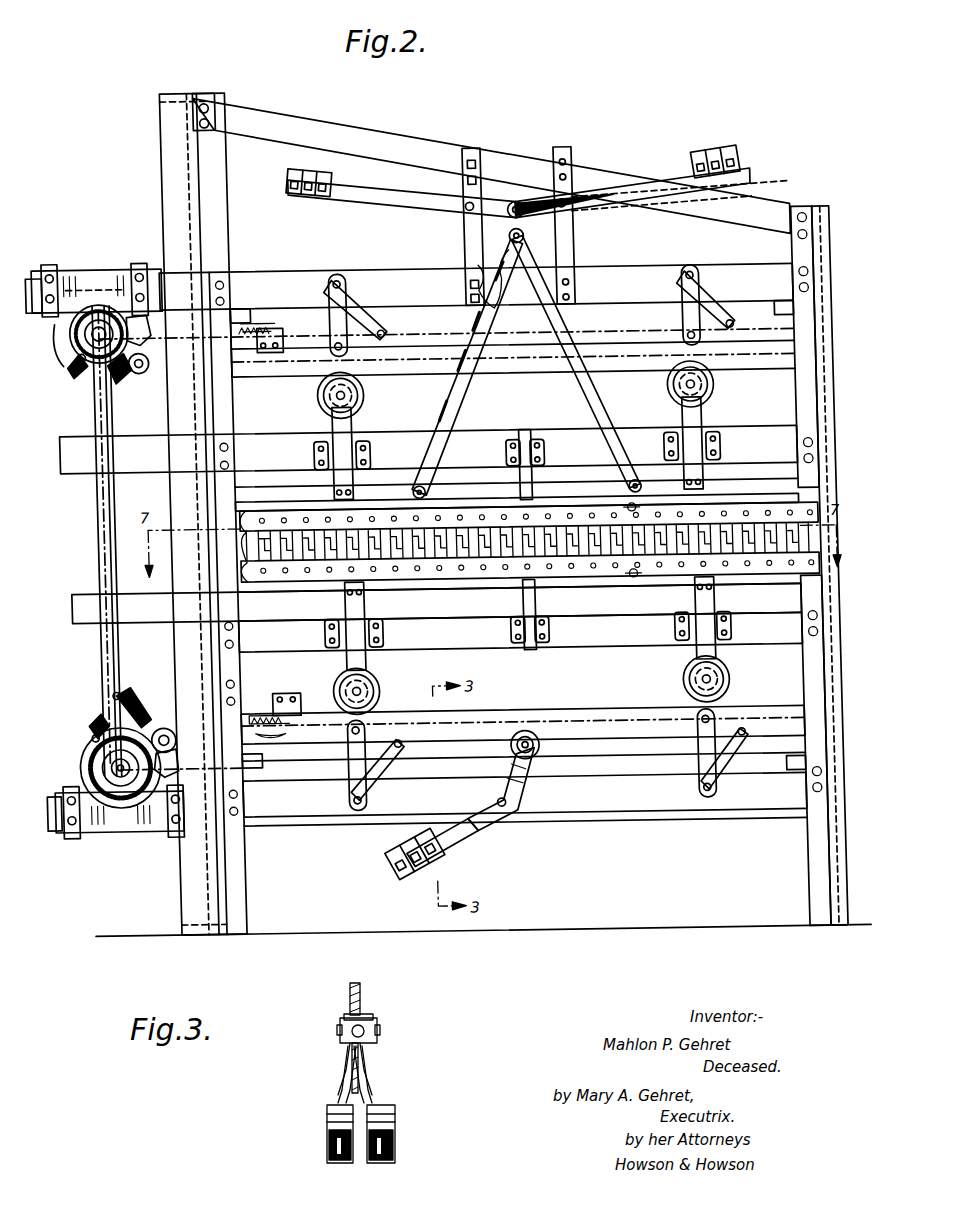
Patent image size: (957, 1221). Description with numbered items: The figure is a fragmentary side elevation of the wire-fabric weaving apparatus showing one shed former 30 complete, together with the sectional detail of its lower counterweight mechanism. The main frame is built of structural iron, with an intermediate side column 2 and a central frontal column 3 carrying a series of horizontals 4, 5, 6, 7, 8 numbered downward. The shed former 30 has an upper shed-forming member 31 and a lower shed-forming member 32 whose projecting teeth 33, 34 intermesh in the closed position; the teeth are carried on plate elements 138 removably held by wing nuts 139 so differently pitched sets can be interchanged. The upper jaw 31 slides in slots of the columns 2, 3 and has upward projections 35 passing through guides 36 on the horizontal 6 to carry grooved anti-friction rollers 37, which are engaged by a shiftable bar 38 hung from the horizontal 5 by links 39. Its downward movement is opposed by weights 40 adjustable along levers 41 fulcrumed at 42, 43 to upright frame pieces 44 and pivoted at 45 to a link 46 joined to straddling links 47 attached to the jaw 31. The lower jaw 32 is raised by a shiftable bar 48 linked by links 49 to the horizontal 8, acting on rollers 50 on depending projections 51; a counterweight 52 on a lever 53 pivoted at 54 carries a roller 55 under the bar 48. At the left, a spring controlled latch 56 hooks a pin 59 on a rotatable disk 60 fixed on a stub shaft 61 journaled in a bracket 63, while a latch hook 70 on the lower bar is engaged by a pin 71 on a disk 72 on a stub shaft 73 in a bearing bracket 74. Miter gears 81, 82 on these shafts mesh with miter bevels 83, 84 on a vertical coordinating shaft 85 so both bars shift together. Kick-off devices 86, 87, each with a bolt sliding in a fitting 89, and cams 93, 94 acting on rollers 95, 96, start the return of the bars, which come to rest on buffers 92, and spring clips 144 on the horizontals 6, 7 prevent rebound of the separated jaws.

In FIG. 2, the intermediate side column 2 is at (171, 153).
In FIG. 2, the frontal column 3 is at (806, 211).
In FIG. 2, the frame horizontal 4 is at (408, 146).
In FIG. 2, the upper frame horizontal 5 is at (46, 272).
In FIG. 2, the frame horizontal 6 is at (82, 440).
In FIG. 2, the frame horizontal 7 is at (90, 620).
In FIG. 2, the lower frame horizontal 8 is at (48, 822).
In FIG. 3, the lower frame horizontal 8 is at (348, 1050).
In FIG. 2, the shed former 30 is at (515, 539).
In FIG. 2, the upper shed-forming member 31 is at (520, 495).
In FIG. 2, the lower shed-forming member 32 is at (530, 590).
In FIG. 2, the teeth 33 is at (626, 509).
In FIG. 2, the teeth 34 is at (434, 552).
In FIG. 2, the upward projections 35 is at (334, 425).
In FIG. 2, the guides 36 is at (364, 441).
In FIG. 2, the anti-friction rollers 37 is at (368, 393).
In FIG. 2, the shiftable bar 38 is at (494, 378).
In FIG. 2, the links 39 is at (333, 312).
In FIG. 2, the weights 40 is at (342, 174).
In FIG. 2, the levers 41 is at (396, 196).
In FIG. 2, the fulcrum 42 is at (475, 203).
In FIG. 2, the fulcrum 43 is at (573, 209).
In FIG. 2, the upright frame pieces 44 is at (518, 228).
In FIG. 2, the pivotal connection 45 is at (524, 202).
In FIG. 2, the link 46 is at (516, 234).
In FIG. 2, the straddling links 47 is at (578, 400).
In FIG. 2, the shiftable bar 48 is at (568, 712).
In FIG. 3, the shiftable bar 48 is at (348, 996).
In FIG. 2, the links 49 is at (362, 794).
In FIG. 2, the anti-friction rollers 50 is at (328, 687).
In FIG. 2, the depending projections 51 is at (364, 660).
In FIG. 2, the counterweight 52 is at (372, 845).
In FIG. 3, the counterweight 52 is at (395, 1163).
In FIG. 2, the lever 53 is at (440, 838).
In FIG. 3, the lever 53 is at (336, 1096).
In FIG. 2, the pivot 54 is at (506, 806).
In FIG. 2, the roller 55 is at (533, 752).
In FIG. 3, the roller 55 is at (364, 1048).
In FIG. 2, the spring controlled latch 56 is at (76, 370).
In FIG. 2, the pin 59 is at (82, 356).
In FIG. 2, the rotatable disk 60 is at (70, 352).
In FIG. 2, the stub shaft 61 is at (165, 336).
In FIG. 2, the bracket 63 is at (132, 262).
In FIG. 2, the latch hook 70 is at (108, 706).
In FIG. 2, the pin 71 is at (84, 724).
In FIG. 2, the rotatable disk 72 is at (76, 746).
In FIG. 2, the stub shaft 73 is at (172, 750).
In FIG. 2, the bearing bracket 74 is at (72, 828).
In FIG. 2, the miter gear 81 is at (78, 334).
In FIG. 2, the miter gear 82 is at (84, 756).
In FIG. 2, the miter bevel 83 is at (82, 320).
In FIG. 2, the miter bevel 84 is at (78, 782).
In FIG. 2, the coordinating shaft 85 is at (96, 517).
In FIG. 2, the kick-off device 86 is at (256, 319).
In FIG. 2, the kick-off device 87 is at (270, 749).
In FIG. 2, the fitting 89 is at (272, 350).
In FIG. 2, the buffers 92 is at (242, 308).
In FIG. 2, the cam 93 is at (158, 322).
In FIG. 2, the cam 94 is at (172, 765).
In FIG. 2, the roller 95 is at (144, 368).
In FIG. 2, the roller 96 is at (158, 722).
In FIG. 2, the plate elements 138 is at (530, 541).
In FIG. 2, the wing nuts 139 is at (752, 508).
In FIG. 2, the spring clips 144 is at (533, 473).